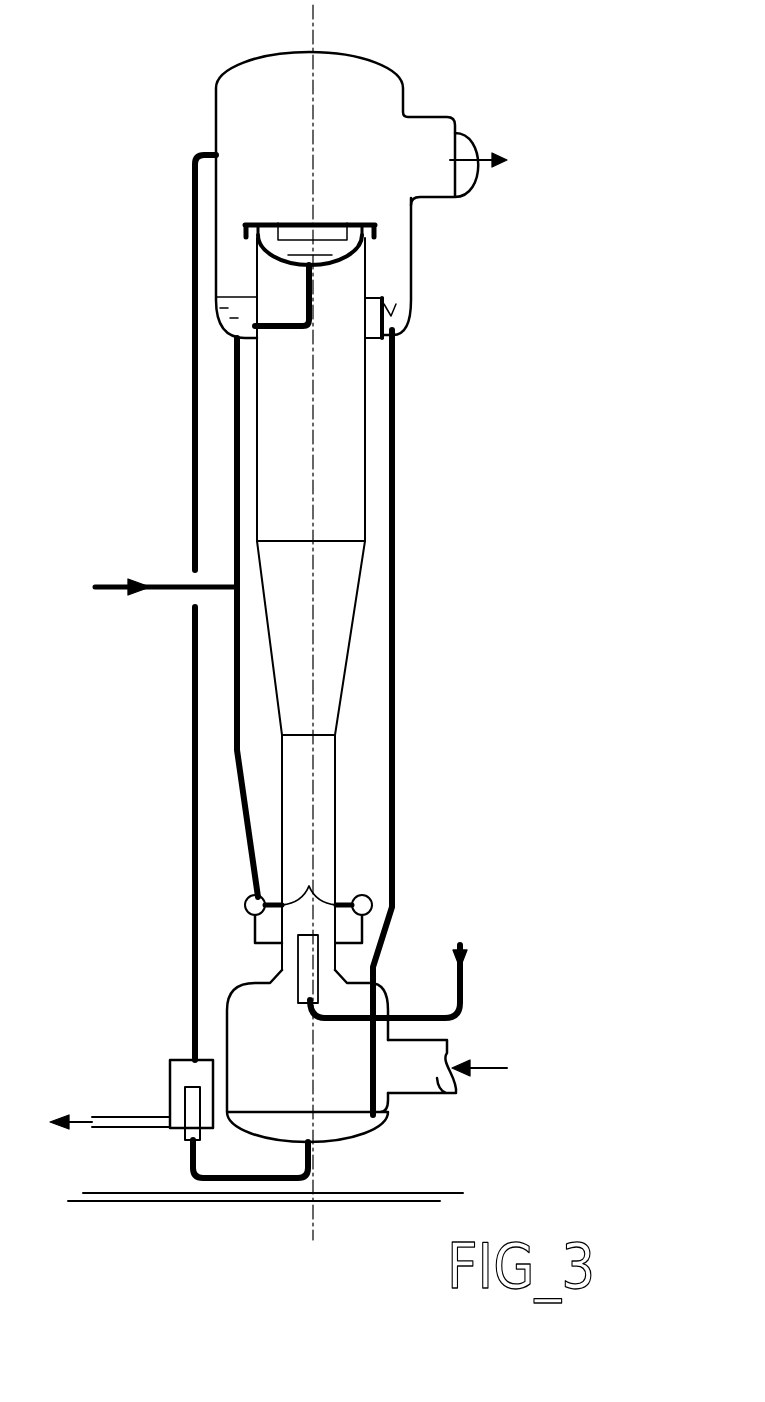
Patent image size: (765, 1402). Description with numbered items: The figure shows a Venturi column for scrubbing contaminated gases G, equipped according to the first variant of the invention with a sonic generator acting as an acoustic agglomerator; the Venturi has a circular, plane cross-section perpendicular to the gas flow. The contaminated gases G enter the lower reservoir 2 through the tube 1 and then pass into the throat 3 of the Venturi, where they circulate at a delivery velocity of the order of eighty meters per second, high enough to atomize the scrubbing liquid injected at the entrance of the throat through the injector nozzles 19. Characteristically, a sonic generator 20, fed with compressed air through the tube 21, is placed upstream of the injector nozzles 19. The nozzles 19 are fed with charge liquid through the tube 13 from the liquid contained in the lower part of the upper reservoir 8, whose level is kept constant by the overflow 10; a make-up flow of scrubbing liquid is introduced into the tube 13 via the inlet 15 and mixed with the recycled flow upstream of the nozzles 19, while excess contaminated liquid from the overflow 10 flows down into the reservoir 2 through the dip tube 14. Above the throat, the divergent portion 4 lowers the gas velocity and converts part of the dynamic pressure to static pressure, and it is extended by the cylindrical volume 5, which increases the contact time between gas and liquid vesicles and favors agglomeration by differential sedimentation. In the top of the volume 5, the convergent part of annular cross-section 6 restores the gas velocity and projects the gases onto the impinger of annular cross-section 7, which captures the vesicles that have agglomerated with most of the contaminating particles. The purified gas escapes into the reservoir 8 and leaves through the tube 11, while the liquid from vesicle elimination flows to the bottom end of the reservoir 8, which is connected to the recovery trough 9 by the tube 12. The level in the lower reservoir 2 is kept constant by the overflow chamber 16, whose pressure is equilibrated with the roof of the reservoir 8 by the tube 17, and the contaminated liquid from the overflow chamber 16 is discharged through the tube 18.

The tube 1 is at (443, 1093).
The reservoir 2 is at (250, 1024).
The throat 3 is at (307, 820).
The divergent portion 4 is at (317, 647).
The cylindrical volume 5 is at (340, 438).
The convergent part of annular cross-section 6 is at (257, 255).
The impinger of annular cross-section 7 is at (262, 227).
The upper reservoir 8 is at (277, 138).
The recovery trough 9 is at (327, 232).
The overflow 10 is at (382, 300).
The tube 11 is at (462, 150).
The tube 12 is at (312, 300).
The tube 13 is at (233, 517).
The dip tube 14 is at (393, 507).
The make-up liquid inlet 15 is at (167, 580).
The overflow chamber 16 is at (177, 1078).
The tube 17 is at (190, 895).
The tube 18 is at (112, 1115).
The injector nozzles 19 is at (308, 896).
The sonic generator 20 is at (317, 963).
The tube 21 is at (462, 978).